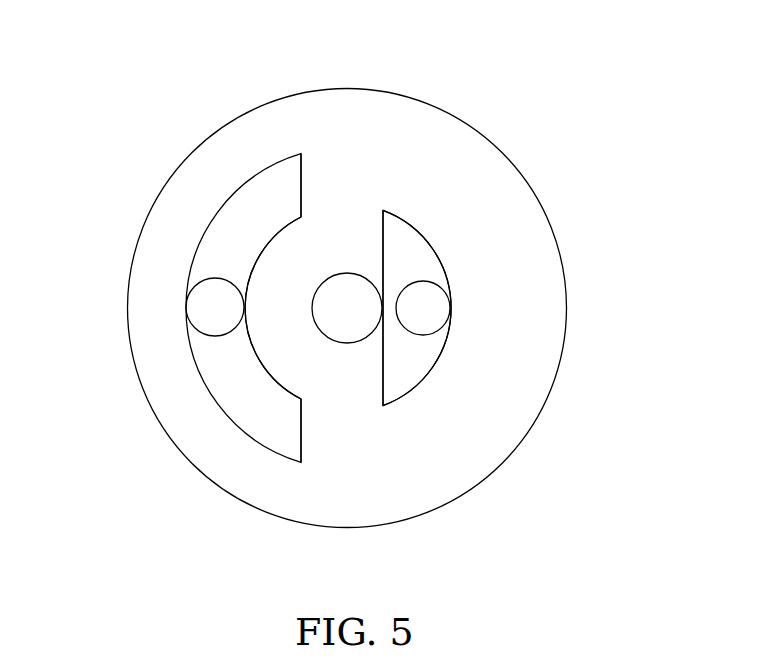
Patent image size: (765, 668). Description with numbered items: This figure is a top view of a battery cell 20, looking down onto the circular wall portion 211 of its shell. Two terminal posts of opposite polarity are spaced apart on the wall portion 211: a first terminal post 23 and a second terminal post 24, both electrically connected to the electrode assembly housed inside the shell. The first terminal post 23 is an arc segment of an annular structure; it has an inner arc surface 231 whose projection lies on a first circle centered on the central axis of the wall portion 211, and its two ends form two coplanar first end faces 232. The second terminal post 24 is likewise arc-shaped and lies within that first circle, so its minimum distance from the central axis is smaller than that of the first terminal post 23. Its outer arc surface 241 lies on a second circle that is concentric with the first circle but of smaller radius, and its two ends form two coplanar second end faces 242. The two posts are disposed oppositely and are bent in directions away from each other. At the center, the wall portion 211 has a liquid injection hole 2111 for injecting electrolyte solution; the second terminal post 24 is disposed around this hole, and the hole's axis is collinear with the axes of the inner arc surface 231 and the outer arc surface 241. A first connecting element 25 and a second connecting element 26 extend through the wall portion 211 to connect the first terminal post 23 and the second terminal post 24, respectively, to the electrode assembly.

The battery cell 20 is at (355, 26).
The wall portion 211 is at (327, 492).
The liquid injection hole 2111 is at (350, 287).
The first terminal post 23 is at (237, 217).
The inner arc surface 231 is at (264, 376).
The first end faces 232 is at (300, 172).
The second terminal post 24 is at (417, 260).
The outer arc surface 241 is at (432, 374).
The second end faces 242 is at (384, 231).
The first connecting element 25 is at (205, 308).
The second connecting element 26 is at (435, 313).